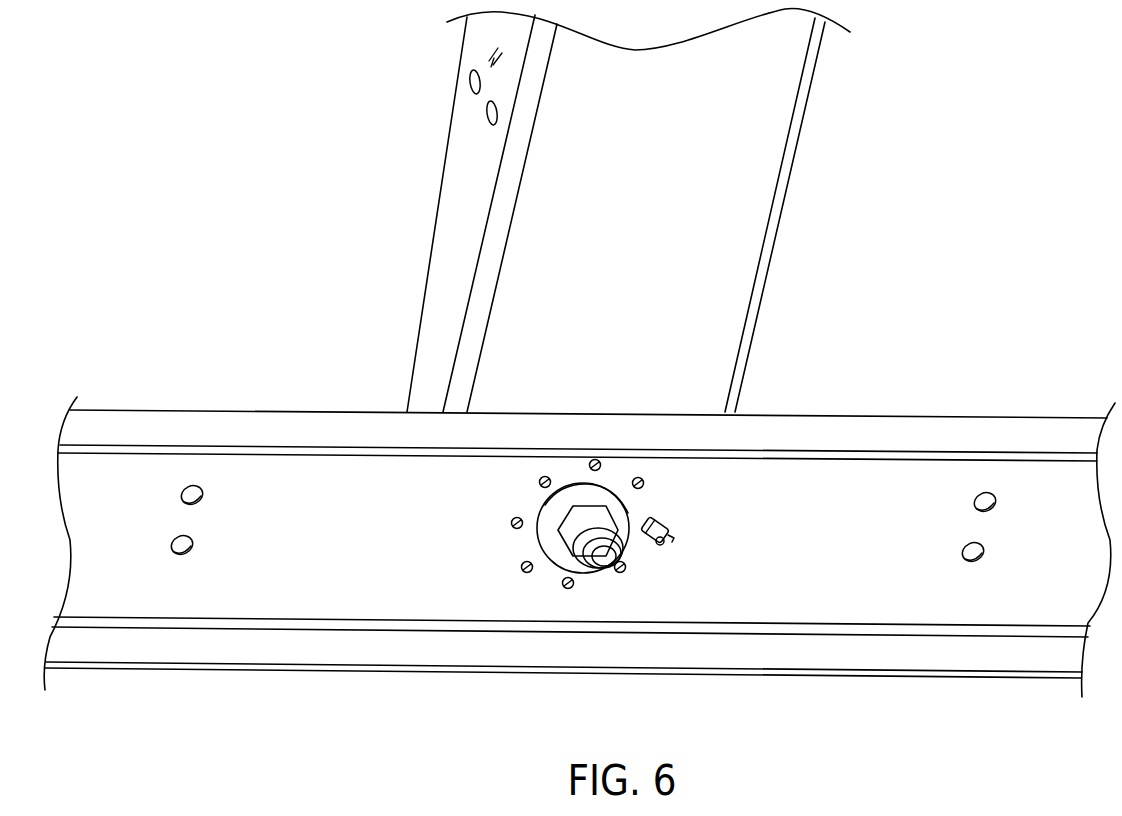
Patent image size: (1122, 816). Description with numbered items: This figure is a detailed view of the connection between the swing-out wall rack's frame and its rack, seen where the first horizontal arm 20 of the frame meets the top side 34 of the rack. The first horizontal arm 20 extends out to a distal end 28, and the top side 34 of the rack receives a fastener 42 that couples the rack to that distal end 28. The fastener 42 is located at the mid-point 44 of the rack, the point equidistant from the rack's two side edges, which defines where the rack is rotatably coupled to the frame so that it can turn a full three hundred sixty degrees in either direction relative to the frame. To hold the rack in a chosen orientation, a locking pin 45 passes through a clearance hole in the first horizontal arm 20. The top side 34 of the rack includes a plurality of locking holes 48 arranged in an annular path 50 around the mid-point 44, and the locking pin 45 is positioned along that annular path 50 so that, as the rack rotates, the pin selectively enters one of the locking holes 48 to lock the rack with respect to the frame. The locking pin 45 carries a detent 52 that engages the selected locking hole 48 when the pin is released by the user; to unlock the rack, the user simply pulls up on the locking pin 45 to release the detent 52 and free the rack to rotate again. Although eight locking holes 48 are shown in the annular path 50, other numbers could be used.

The first horizontal arm 20 is at (725, 233).
The distal end 28 is at (686, 357).
The top side 34 is at (873, 493).
The fastener 42 is at (588, 530).
The mid-point 44 is at (587, 600).
The locking pin 45 is at (650, 522).
The locking holes 48 is at (636, 477).
The annular path 50 is at (513, 546).
The detent 52 is at (672, 537).